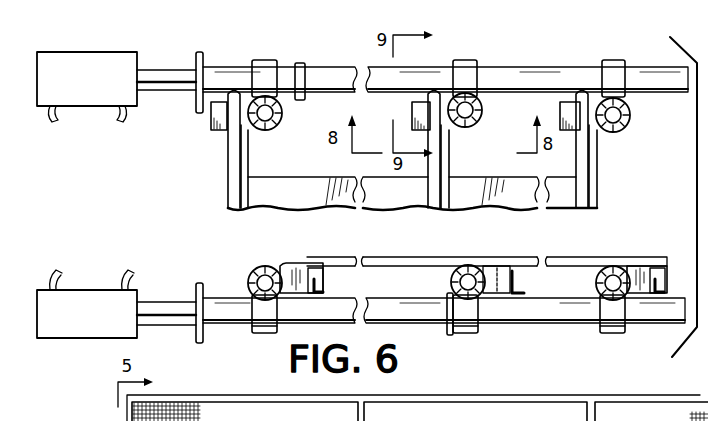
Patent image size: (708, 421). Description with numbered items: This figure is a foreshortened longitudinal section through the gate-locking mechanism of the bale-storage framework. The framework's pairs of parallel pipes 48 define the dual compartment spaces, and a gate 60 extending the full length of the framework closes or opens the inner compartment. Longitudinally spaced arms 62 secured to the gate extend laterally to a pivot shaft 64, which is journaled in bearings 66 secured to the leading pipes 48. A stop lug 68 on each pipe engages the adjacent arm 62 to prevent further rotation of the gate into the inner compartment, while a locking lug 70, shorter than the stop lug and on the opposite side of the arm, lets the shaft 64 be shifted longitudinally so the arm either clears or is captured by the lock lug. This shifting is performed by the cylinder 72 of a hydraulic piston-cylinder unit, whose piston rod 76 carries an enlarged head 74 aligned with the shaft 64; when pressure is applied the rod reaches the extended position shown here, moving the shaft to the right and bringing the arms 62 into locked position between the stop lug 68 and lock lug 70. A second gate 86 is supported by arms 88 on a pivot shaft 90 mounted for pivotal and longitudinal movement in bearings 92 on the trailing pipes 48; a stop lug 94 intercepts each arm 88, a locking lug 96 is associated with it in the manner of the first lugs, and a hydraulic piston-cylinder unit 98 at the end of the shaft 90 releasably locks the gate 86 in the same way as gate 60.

The parallel pipes 48 is at (278, 129).
The gate 60 is at (333, 199).
The arms 62 is at (233, 190).
The pivot shaft 64 is at (516, 77).
The bearings 66 is at (475, 62).
The stop lug 68 is at (212, 123).
The locking lug 70 is at (237, 129).
The cylinder 72 is at (82, 99).
The enlarged head 74 is at (197, 56).
The piston rod 76 is at (172, 85).
The second gate 86 is at (396, 262).
The arms 88 is at (327, 282).
The pivot shaft 90 is at (525, 324).
The bearings 92 is at (577, 315).
The stop lug 94 is at (311, 275).
The locking lug 96 is at (290, 267).
The hydraulic piston-cylinder unit 98 is at (82, 319).